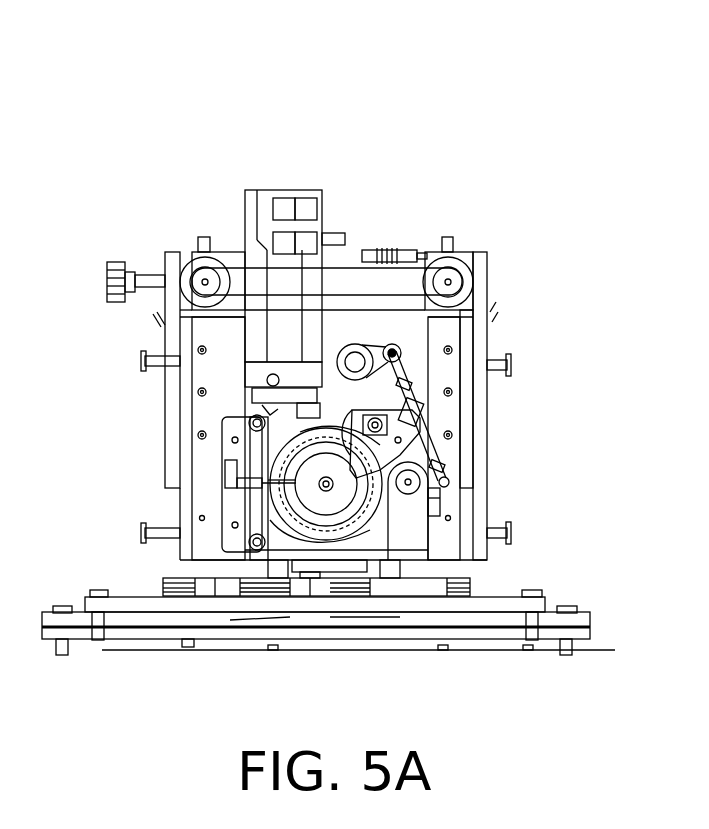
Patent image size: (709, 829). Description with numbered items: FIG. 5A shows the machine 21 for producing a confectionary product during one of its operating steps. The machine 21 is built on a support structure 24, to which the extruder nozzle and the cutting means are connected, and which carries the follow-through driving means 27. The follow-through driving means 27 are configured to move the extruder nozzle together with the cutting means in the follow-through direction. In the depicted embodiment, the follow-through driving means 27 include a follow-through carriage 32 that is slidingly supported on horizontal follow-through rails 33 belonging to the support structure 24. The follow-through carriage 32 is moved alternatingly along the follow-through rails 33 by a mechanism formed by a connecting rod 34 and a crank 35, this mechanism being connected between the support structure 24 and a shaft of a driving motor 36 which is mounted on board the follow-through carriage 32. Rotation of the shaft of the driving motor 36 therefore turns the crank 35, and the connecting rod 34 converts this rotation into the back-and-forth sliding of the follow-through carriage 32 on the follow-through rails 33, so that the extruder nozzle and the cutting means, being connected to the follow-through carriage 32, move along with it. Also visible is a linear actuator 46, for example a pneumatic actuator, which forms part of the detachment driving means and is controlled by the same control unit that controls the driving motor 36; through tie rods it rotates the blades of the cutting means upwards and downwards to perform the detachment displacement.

The machine 21 is at (508, 232).
The support structure 24 is at (503, 632).
The follow-through driving means 27 is at (370, 493).
The follow-through carriage 32 is at (205, 469).
The follow-through rails 33 is at (177, 578).
The connecting rod 34 is at (372, 460).
The crank 35 is at (327, 495).
The driving motor 36 is at (330, 435).
The linear actuator 46 is at (425, 400).